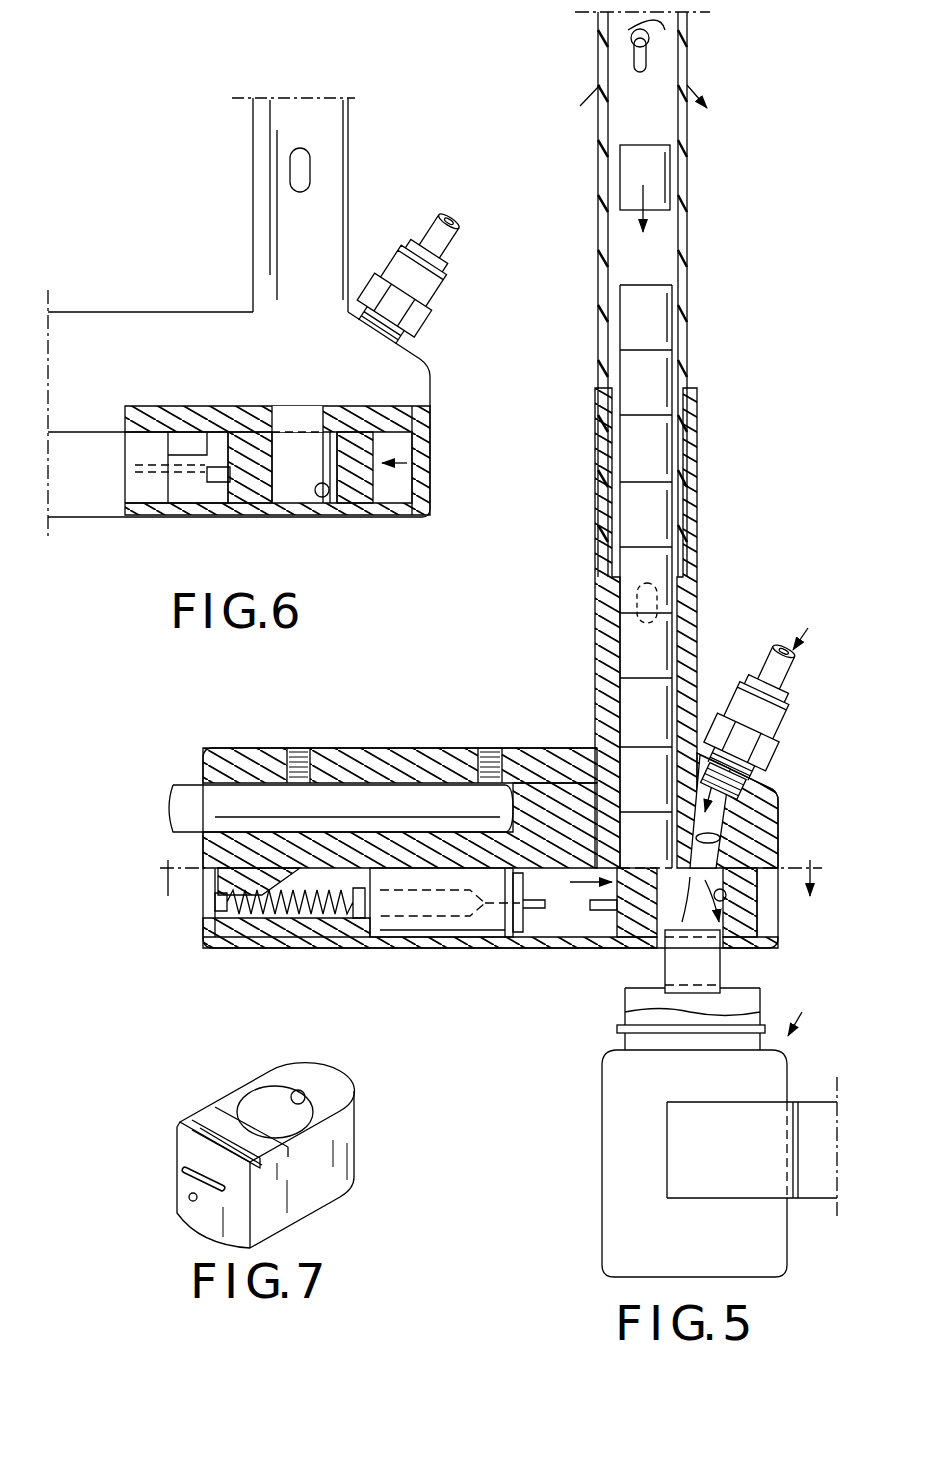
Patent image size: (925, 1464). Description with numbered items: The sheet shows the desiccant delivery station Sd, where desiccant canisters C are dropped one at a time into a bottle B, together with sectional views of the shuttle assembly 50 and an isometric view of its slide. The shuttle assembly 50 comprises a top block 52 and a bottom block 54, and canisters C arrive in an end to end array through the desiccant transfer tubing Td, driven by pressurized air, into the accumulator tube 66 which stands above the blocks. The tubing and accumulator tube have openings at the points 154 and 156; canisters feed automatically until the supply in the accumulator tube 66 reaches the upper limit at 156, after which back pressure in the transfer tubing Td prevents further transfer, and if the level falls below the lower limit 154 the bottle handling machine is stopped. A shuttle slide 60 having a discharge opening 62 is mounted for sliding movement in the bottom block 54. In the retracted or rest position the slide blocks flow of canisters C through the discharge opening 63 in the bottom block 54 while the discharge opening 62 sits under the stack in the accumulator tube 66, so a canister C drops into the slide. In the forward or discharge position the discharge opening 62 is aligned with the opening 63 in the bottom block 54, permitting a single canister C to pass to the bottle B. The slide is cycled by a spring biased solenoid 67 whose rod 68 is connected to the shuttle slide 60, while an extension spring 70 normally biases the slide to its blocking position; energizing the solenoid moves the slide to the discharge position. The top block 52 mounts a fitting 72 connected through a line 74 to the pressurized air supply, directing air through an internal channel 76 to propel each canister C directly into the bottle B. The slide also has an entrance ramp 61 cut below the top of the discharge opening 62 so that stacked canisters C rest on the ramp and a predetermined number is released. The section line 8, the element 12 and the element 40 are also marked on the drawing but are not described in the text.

In FIG. 5, the section line 8- 8 is at (490, 875).
In FIG. 5, the sensor 12 is at (815, 1200).
In FIG. 5, the dispensing head 40 is at (237, 748).
In FIG. 5, the shuttle assembly 50 is at (348, 748).
In FIG. 6, the top block 52 is at (128, 318).
In FIG. 5, the top block 52 is at (524, 748).
In FIG. 6, the bottom block 54 is at (90, 518).
In FIG. 5, the bottom block 54 is at (302, 948).
In FIG. 6, the shuttle slide 60 is at (245, 497).
In FIG. 7, the shuttle slide 60 is at (344, 1142).
In FIG. 5, the shuttle slide 60 is at (613, 937).
In FIG. 7, the entrance ramp 61 is at (184, 1148).
In FIG. 6, the discharge opening 62 is at (328, 494).
In FIG. 7, the discharge opening 62 is at (304, 1095).
In FIG. 5, the discharge opening 62 is at (726, 896).
In FIG. 6, the discharge opening in the shuttle bottom block 63 is at (318, 505).
In FIG. 6, the accumulator tube 66 is at (253, 202).
In FIG. 5, the accumulator tube 66 is at (597, 530).
In FIG. 6, the spring biased solenoid 67 is at (154, 490).
In FIG. 5, the spring biased solenoid 67 is at (462, 937).
In FIG. 5, the rod 68 is at (568, 928).
In FIG. 5, the extension spring 70 is at (277, 903).
In FIG. 6, the fitting 72 is at (428, 320).
In FIG. 5, the fitting 72 is at (780, 744).
In FIG. 6, the line 74 is at (446, 243).
In FIG. 5, the line 74 is at (793, 678).
In FIG. 5, the internal channel 76 is at (708, 840).
In FIG. 6, the lower limit opening 154 is at (303, 172).
In FIG. 5, the lower limit opening 154 is at (660, 605).
In FIG. 5, the upper limit opening 156 is at (650, 40).
In FIG. 5, the bottle B is at (612, 1182).
In FIG. 6, the desiccant canister C is at (312, 455).
In FIG. 5, the desiccant canister C is at (665, 190).
In FIG. 5, the desiccant transfer tubing Td is at (597, 150).
In FIG. 5, the desiccant delivery station Sd is at (809, 1014).